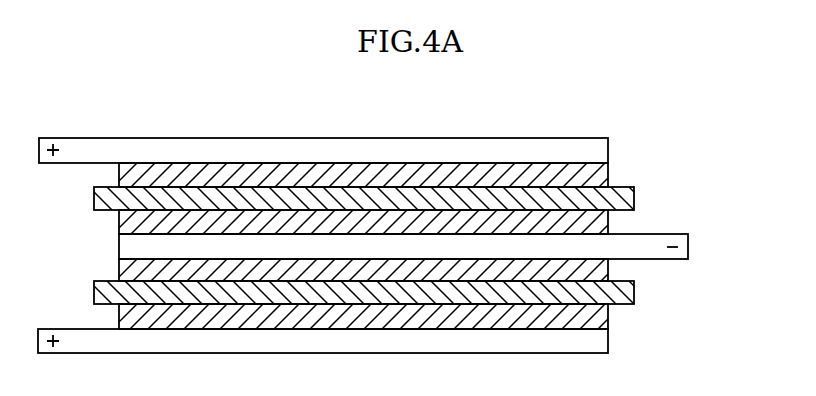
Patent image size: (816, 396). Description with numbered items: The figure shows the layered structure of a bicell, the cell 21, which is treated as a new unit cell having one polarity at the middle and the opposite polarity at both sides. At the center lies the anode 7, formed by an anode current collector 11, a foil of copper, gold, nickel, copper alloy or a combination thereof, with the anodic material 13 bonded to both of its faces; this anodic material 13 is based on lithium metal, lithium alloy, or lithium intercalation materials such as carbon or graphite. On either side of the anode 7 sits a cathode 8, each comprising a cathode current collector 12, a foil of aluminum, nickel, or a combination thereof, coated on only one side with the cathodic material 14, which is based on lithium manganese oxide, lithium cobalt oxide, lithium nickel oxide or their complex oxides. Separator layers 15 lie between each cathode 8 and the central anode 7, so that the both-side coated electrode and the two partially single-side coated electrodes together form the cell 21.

The anode 7 is at (757, 200).
The cathode 8 is at (682, 90).
The anode current collector 11 is at (682, 253).
The cathode current collector 12 is at (600, 152).
The anodic material 13 is at (603, 222).
The cathodic material 14 is at (600, 178).
The solid electrolyte layer 15 is at (94, 196).
The cell 21 is at (728, 176).